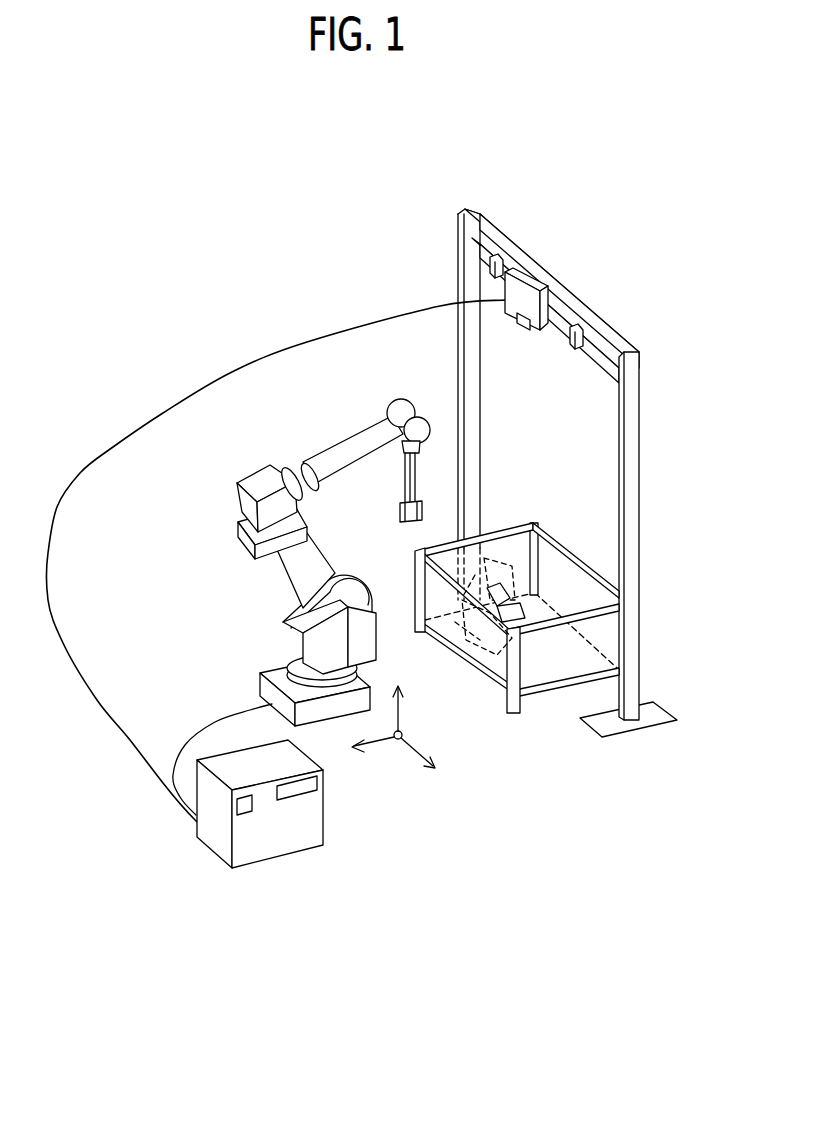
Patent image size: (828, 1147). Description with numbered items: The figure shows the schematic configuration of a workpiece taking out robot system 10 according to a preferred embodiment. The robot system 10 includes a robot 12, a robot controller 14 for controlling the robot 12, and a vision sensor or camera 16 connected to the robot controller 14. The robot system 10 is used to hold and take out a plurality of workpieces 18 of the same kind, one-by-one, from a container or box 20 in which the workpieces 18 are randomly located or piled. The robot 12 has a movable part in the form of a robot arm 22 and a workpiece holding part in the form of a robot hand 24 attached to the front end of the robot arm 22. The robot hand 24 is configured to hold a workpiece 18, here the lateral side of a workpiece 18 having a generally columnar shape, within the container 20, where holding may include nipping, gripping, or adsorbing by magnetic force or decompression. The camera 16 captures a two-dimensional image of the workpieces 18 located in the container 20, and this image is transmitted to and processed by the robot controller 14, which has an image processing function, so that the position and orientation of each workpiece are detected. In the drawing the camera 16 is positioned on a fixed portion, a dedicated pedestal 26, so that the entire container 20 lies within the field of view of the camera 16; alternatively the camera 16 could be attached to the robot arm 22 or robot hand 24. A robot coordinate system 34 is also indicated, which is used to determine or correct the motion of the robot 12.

The workpiece taking out robot system 10 is at (119, 368).
The robot 12 is at (242, 589).
The robot controller 14 is at (285, 886).
The vision sensor (camera) 16 is at (540, 332).
The workpiece 18 is at (514, 593).
The container (box) 20 is at (548, 692).
The robot arm 22 is at (348, 440).
The robot hand 24 is at (398, 509).
The dedicated pedestal 26 is at (638, 424).
The robot coordinate system 34 is at (388, 760).